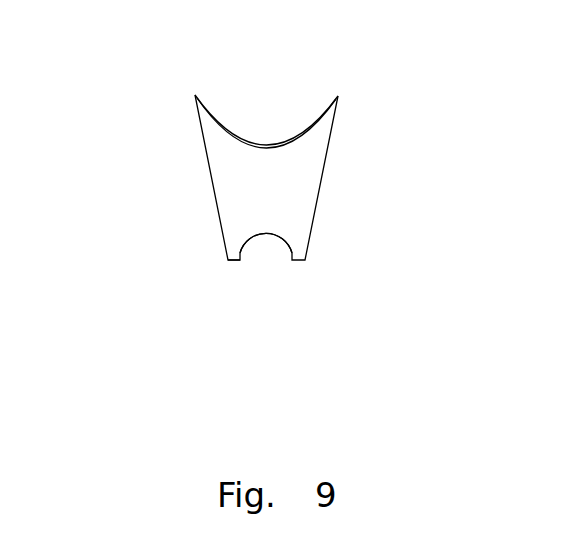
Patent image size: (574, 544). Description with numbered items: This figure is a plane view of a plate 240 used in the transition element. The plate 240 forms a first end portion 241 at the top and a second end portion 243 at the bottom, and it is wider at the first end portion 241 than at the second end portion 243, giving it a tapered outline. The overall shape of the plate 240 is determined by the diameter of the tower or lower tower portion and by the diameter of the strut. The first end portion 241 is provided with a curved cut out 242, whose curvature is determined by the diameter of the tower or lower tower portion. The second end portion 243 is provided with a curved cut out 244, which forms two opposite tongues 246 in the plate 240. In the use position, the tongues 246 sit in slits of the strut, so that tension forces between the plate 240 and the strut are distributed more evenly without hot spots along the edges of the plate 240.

The plate 240 is at (262, 188).
The first end portion 241 is at (268, 159).
The curved cut out 242 is at (277, 143).
The second end portion 243 is at (267, 220).
The curved cut out 244 is at (273, 237).
The tongues 246 is at (234, 252).